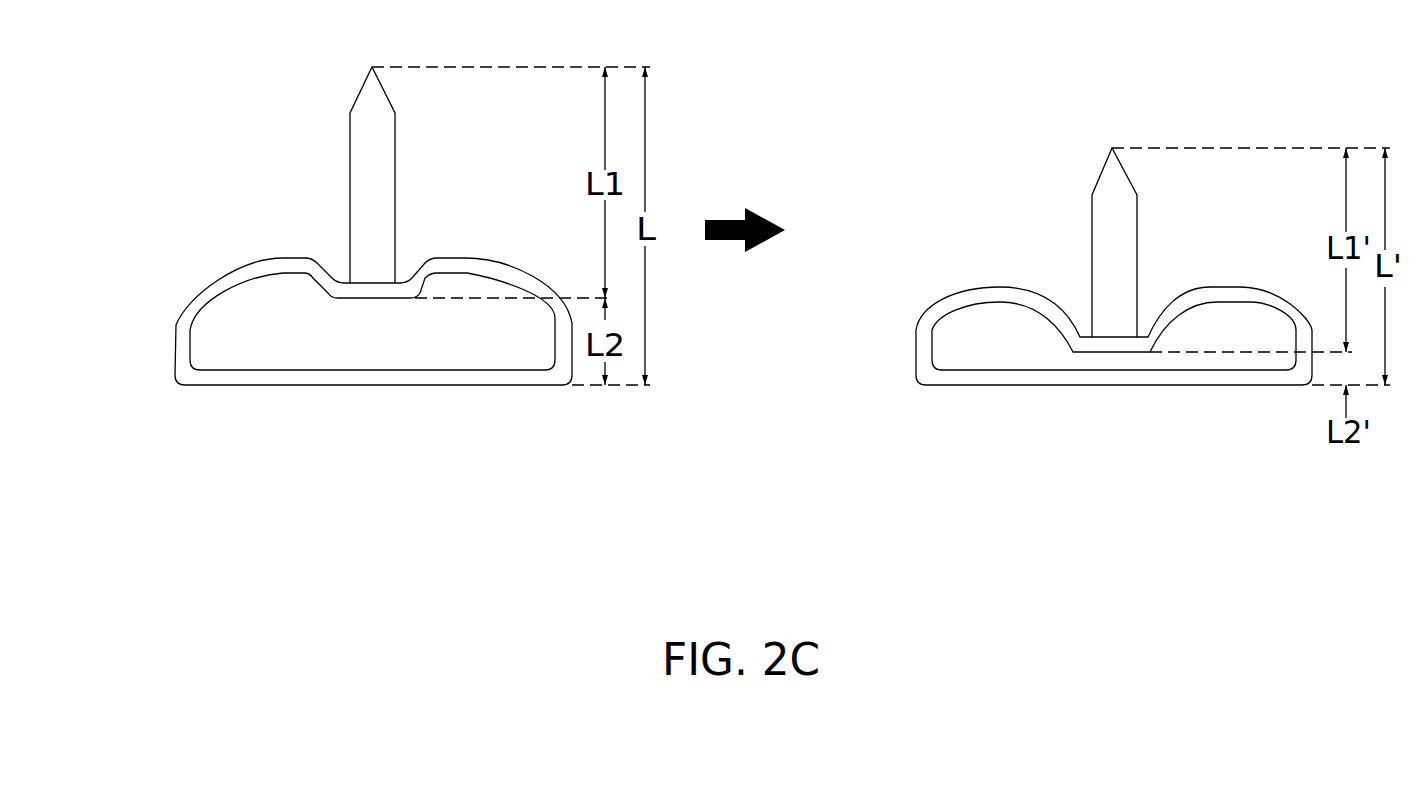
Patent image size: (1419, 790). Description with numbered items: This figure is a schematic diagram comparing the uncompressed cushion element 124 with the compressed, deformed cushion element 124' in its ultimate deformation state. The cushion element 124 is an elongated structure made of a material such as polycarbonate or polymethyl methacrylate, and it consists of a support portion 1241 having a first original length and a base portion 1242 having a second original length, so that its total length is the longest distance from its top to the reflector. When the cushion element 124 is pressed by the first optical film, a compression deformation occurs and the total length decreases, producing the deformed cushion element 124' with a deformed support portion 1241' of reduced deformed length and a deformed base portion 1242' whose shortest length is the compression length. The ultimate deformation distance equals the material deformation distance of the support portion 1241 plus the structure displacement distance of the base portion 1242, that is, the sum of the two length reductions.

The cushion element 124 is at (320, 226).
The support portion 1241 is at (318, 175).
The base portion 1242 is at (320, 320).
The deformed cushion element 124' is at (1058, 266).
The deformed support portion 1241' is at (1057, 242).
The deformed base portion 1242' is at (1058, 321).